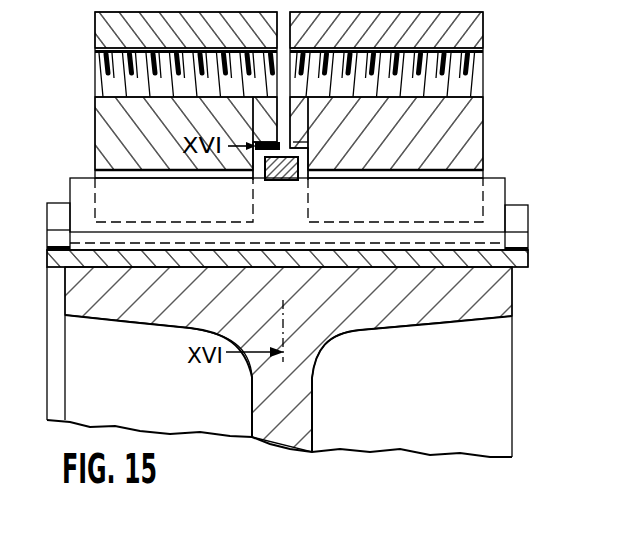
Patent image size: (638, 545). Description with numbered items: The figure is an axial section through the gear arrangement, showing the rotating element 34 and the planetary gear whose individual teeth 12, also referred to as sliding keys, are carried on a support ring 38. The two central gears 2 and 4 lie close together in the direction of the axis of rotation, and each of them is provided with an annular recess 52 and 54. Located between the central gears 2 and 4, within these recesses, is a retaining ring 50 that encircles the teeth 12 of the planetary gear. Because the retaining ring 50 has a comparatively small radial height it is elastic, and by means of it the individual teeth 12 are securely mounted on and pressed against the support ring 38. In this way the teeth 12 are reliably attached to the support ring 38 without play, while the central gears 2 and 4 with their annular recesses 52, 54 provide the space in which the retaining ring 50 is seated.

The central gear 2 is at (112, 27).
The central gear 4 is at (467, 32).
The teeth 12 is at (82, 186).
The rotating element 34 is at (300, 404).
The support ring 38 is at (435, 262).
The retaining ring 50 is at (298, 180).
The annular recess 52 is at (277, 146).
The annular recess 54 is at (310, 143).